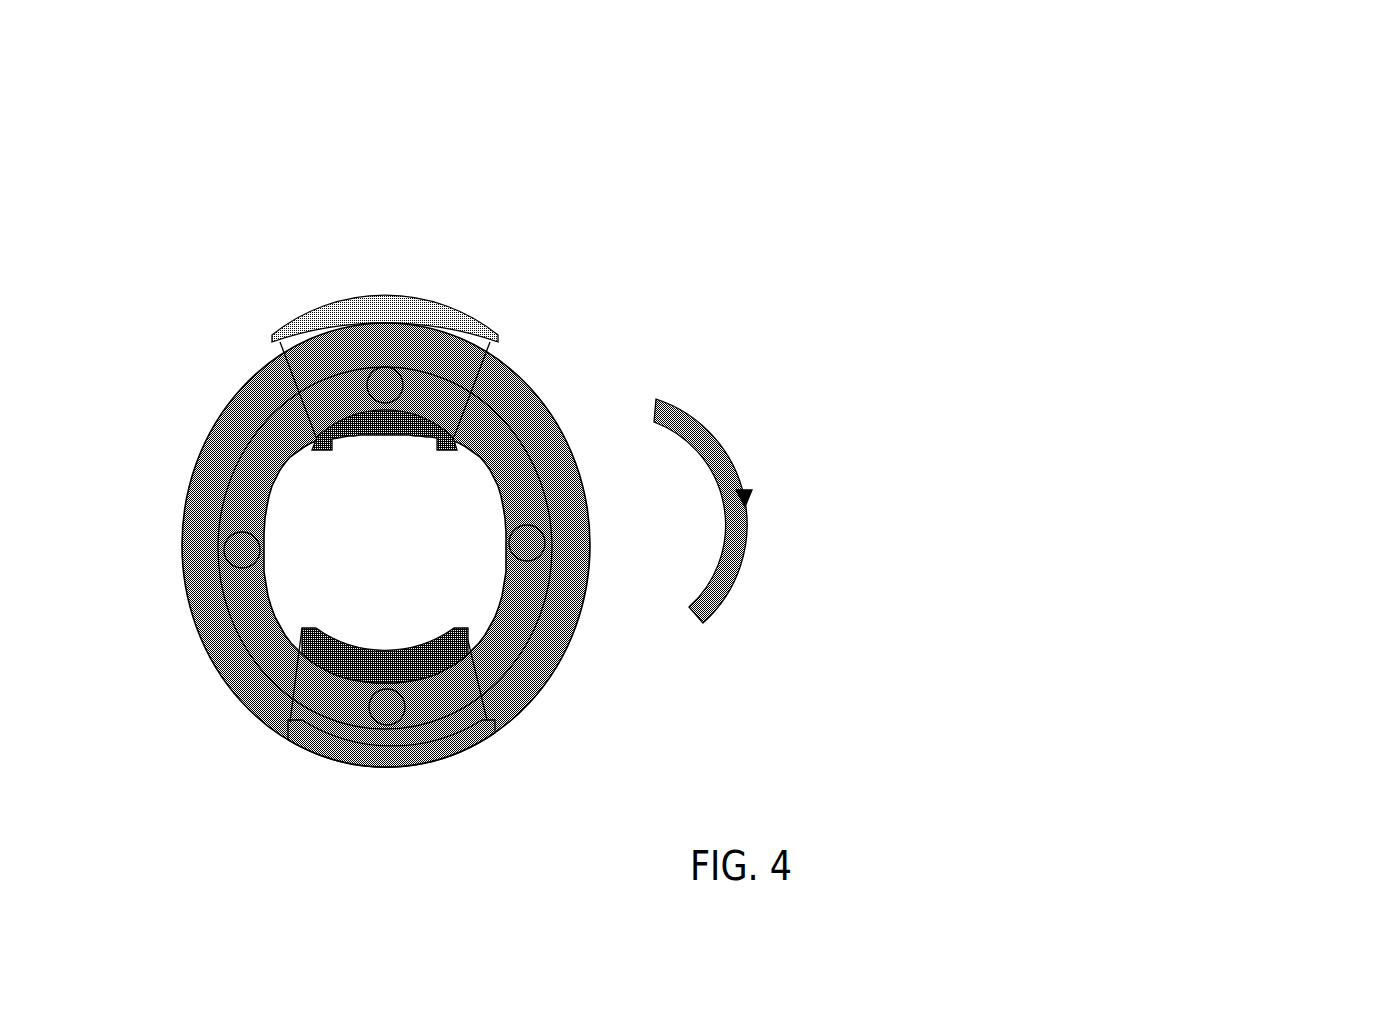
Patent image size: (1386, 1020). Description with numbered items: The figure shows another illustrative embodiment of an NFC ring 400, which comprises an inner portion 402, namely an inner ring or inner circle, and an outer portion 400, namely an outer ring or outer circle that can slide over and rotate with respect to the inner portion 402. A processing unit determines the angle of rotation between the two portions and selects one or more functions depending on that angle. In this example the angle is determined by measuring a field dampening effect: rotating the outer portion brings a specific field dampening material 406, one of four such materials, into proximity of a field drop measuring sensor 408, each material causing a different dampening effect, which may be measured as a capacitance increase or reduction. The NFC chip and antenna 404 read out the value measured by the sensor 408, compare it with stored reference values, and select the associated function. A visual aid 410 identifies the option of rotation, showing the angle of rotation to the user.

The NFC ring 400 is at (232, 437).
The inner portion 402 is at (255, 470).
The NFC chip and antenna 404 is at (390, 757).
The field dampening material 406 is at (220, 550).
The field drop measuring sensor 408 is at (463, 628).
The visual aid 410 is at (642, 135).